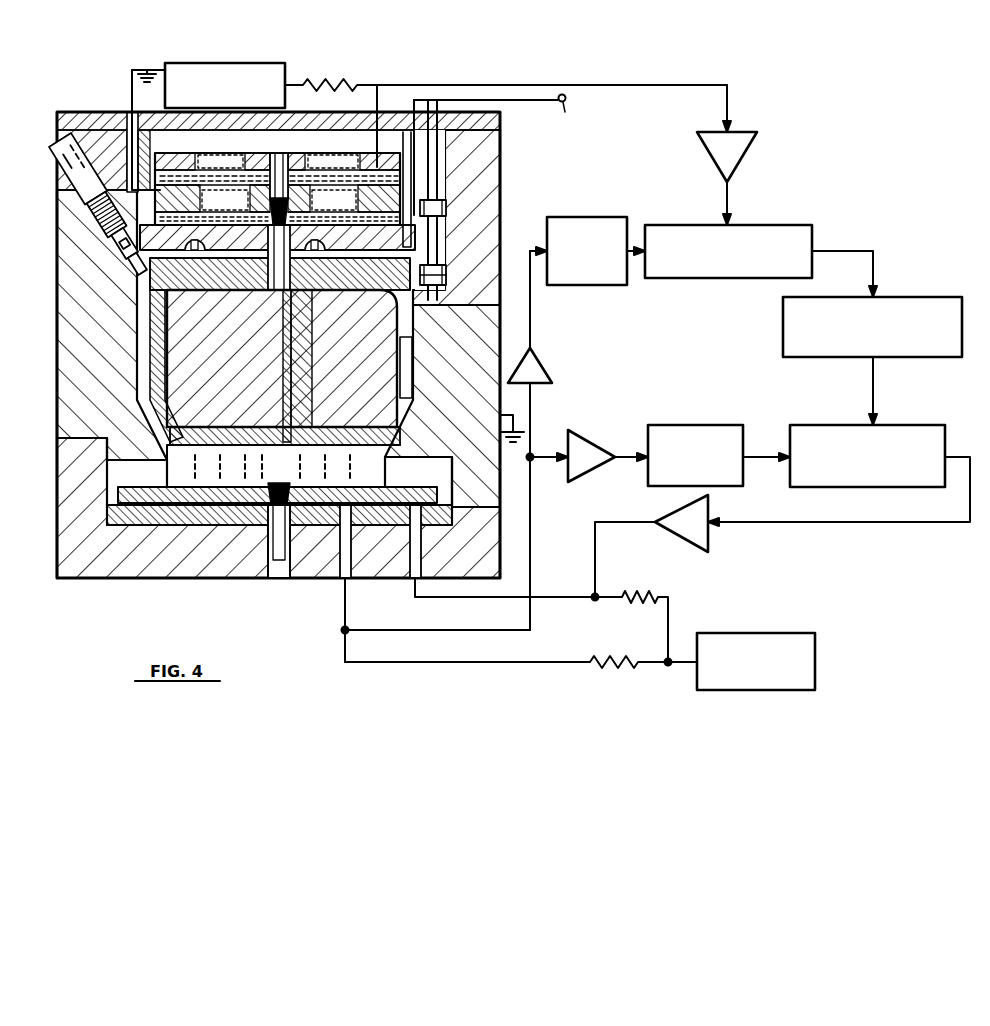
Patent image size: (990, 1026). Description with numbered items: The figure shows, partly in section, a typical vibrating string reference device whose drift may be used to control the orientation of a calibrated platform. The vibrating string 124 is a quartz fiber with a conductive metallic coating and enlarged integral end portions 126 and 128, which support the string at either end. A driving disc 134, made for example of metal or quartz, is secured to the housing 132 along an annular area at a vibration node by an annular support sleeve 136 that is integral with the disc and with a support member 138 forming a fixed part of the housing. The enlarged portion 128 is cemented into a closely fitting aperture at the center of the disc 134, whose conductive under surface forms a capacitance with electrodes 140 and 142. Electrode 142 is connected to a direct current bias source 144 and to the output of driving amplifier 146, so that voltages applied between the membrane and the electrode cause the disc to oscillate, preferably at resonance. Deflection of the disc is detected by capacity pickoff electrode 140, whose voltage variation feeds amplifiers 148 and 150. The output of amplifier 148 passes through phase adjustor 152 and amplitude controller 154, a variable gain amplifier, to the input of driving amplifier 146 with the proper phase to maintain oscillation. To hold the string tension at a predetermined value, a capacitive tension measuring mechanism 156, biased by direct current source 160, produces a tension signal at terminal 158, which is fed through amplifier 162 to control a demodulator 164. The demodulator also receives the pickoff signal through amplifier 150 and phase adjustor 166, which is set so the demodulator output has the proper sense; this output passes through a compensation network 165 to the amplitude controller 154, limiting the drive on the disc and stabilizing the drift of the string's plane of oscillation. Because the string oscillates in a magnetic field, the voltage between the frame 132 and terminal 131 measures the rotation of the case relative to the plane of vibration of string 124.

The vibrating string 124 is at (275, 370).
The enlarged integral end portion 126 is at (262, 224).
The enlarged integral end portion 128 is at (285, 490).
The terminal 131 is at (500, 114).
The housing 132 is at (488, 166).
The driving disc 134 is at (373, 490).
The annular support sleeve 136 is at (385, 477).
The support member 138 is at (483, 403).
The capacity pickoff electrode 140 is at (324, 522).
The electrode 142 is at (125, 508).
The direct current bias source 144 is at (802, 668).
The driving amplifier 146 is at (696, 532).
The amplifier 148 is at (577, 450).
The amplifier 150 is at (536, 368).
The phase adjustor 152 is at (716, 428).
The amplitude controller 154 is at (923, 438).
The capacitive tension measuring mechanism 156 is at (352, 151).
The terminal 158 is at (377, 84).
The direct current source 160 is at (189, 72).
The amplifier 162 is at (729, 153).
The demodulator 164 is at (748, 235).
The compensation network 165 is at (800, 316).
The phase adjustor 166 is at (588, 230).